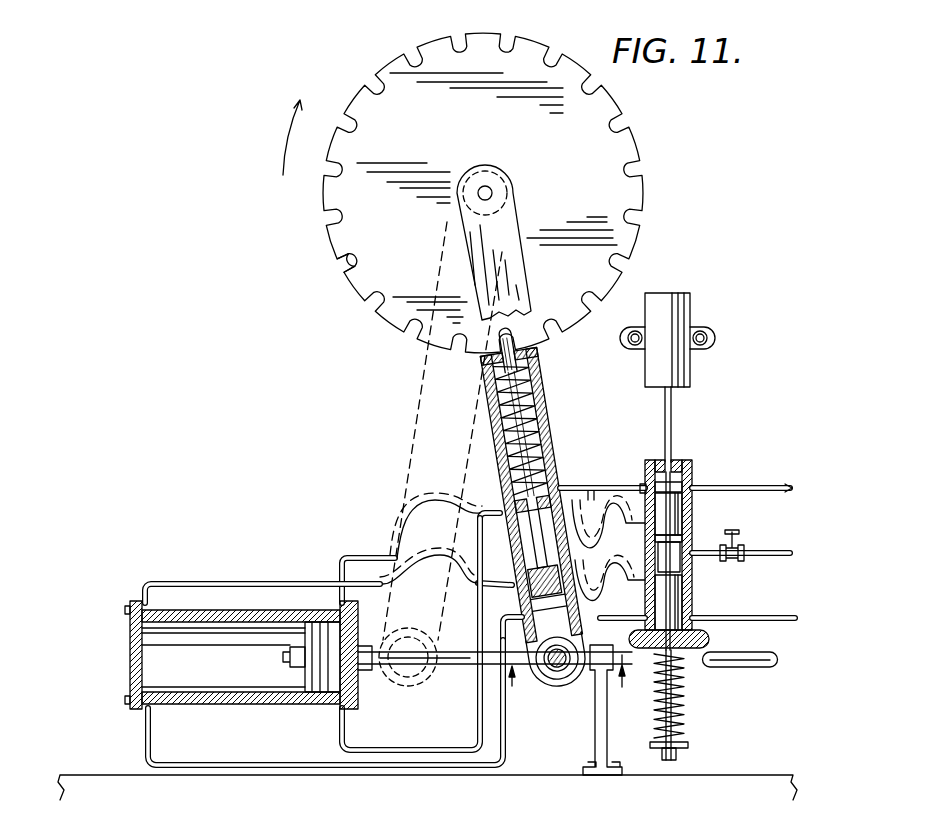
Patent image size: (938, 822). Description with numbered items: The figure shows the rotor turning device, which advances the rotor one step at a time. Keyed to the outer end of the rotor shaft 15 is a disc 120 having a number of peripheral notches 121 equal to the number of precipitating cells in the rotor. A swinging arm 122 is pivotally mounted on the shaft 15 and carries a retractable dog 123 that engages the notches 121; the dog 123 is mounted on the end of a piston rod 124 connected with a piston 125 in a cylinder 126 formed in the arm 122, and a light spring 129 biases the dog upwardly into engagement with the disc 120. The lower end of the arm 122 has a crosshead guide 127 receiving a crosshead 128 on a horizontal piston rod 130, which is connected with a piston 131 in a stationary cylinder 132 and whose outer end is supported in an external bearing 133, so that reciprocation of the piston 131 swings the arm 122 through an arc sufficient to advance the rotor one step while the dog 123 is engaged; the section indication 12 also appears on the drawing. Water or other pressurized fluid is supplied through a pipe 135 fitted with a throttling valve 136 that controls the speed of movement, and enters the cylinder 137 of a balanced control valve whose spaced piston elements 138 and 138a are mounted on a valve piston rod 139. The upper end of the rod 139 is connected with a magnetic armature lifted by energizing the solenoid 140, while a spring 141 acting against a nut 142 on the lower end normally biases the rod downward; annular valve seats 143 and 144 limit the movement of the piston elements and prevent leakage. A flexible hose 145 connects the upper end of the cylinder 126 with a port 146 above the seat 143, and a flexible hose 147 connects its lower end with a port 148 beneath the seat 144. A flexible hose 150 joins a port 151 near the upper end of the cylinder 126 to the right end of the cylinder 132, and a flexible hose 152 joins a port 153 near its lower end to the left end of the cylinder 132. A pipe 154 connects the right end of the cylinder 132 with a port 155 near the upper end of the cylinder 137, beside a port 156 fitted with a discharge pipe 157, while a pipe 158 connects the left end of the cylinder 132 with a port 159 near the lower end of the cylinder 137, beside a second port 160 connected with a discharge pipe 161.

The rotor shaft 15 is at (492, 191).
The disc 120 is at (325, 243).
The peripheral notches 121 is at (347, 264).
The swinging arm 122 is at (517, 256).
The retractable dog 123 is at (514, 330).
The piston rod 124 is at (541, 400).
The light spring 129 is at (538, 421).
The piston 125 is at (535, 556).
The cylinder 126 is at (556, 582).
The crosshead 128 is at (566, 682).
The crosshead guide 127 is at (500, 644).
The horizontal piston rod 130 is at (466, 665).
The piston 131 is at (300, 679).
The stationary cylinder 132 is at (214, 697).
The external bearing 133 is at (590, 668).
The section line 12 is at (579, 673).
The pipe 135 is at (785, 552).
The throttling valve 136 is at (740, 546).
The cylinder 137 is at (694, 470).
The piston element 138 is at (683, 504).
The piston element 138a is at (686, 598).
The valve piston rod 139 is at (672, 427).
The solenoid 140 is at (692, 300).
The spring 141 is at (686, 701).
The nut 142 is at (689, 747).
The annular valve seat 143 is at (690, 540).
The annular valve seat 144 is at (672, 566).
The flexible hose 145 is at (590, 486).
The port 146 is at (641, 486).
The flexible hose 147 is at (645, 530).
The port 148 is at (645, 588).
The flexible hose 150 is at (392, 556).
The port 151 is at (510, 540).
The flexible hose 152 is at (424, 578).
The port 153 is at (520, 598).
The pipe 154 is at (418, 747).
The port 155 is at (650, 465).
The port 156 is at (760, 478).
The discharge pipe 157 is at (788, 484).
The pipe 158 is at (316, 763).
The port 159 is at (640, 620).
The port 160 is at (696, 626).
The discharge pipe 161 is at (770, 622).